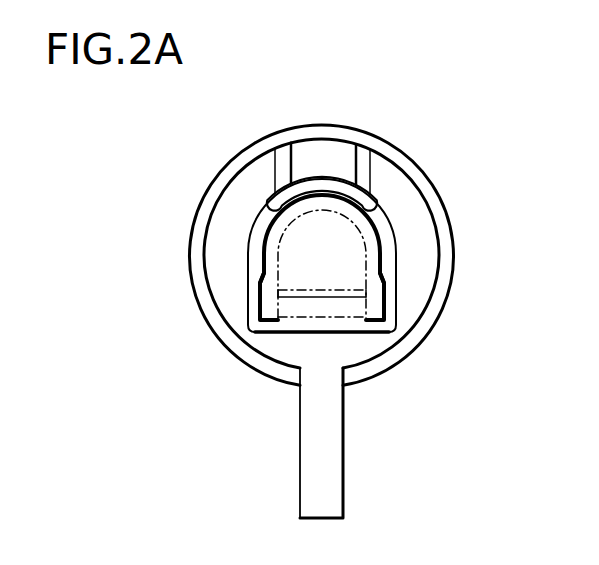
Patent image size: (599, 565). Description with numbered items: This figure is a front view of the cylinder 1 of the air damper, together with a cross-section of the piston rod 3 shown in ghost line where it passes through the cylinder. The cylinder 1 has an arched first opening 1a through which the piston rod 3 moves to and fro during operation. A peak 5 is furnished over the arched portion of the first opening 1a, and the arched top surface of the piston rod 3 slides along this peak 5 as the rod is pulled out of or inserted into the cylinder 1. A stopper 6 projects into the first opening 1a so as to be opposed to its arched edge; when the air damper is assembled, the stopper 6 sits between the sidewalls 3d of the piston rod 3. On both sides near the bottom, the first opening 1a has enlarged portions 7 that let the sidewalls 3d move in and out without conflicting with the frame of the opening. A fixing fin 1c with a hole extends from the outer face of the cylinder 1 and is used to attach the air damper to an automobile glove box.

The cylinder 1 is at (462, 210).
The first opening 1a is at (290, 227).
The fixing fin 1c is at (322, 488).
The piston rod 3 is at (378, 217).
The sidewalls 3d is at (393, 242).
The peak 5 is at (321, 192).
The stopper 6 is at (320, 307).
The enlarged portions 7 is at (258, 296).